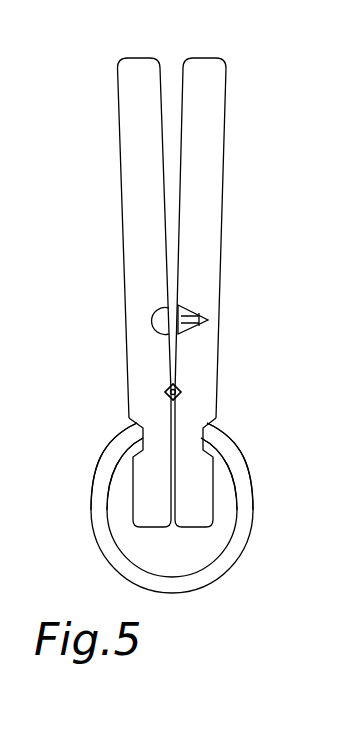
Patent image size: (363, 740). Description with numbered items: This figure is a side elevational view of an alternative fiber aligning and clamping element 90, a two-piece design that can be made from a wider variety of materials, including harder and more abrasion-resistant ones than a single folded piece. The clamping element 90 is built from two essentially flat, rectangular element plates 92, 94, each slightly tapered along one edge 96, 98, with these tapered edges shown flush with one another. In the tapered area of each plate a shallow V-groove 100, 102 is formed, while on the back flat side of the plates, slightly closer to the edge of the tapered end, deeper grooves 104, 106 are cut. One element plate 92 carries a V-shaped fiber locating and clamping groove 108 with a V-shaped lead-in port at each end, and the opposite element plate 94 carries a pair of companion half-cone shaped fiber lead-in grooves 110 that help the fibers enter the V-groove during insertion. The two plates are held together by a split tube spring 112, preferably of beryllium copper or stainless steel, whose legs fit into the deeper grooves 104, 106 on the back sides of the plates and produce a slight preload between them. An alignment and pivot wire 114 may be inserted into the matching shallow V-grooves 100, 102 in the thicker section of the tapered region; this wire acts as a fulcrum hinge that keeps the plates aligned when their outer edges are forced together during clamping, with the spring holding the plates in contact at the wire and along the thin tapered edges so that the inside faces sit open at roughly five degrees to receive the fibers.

The clamping element 90 is at (77, 393).
The element plate 92 is at (213, 82).
The element plate 94 is at (127, 85).
The tapered edge 96 is at (187, 527).
The tapered edge 98 is at (143, 527).
The shallow V-groove 100 is at (177, 388).
The shallow V-groove 102 is at (169, 389).
The deeper groove 104 is at (222, 440).
The deeper groove 106 is at (132, 428).
The V-shaped fiber locating and clamping groove 108 is at (192, 312).
The half-cone shaped fiber lead-in grooves 110 is at (158, 312).
The split tube spring 112 is at (248, 533).
The alignment and pivot wire 114 is at (179, 394).